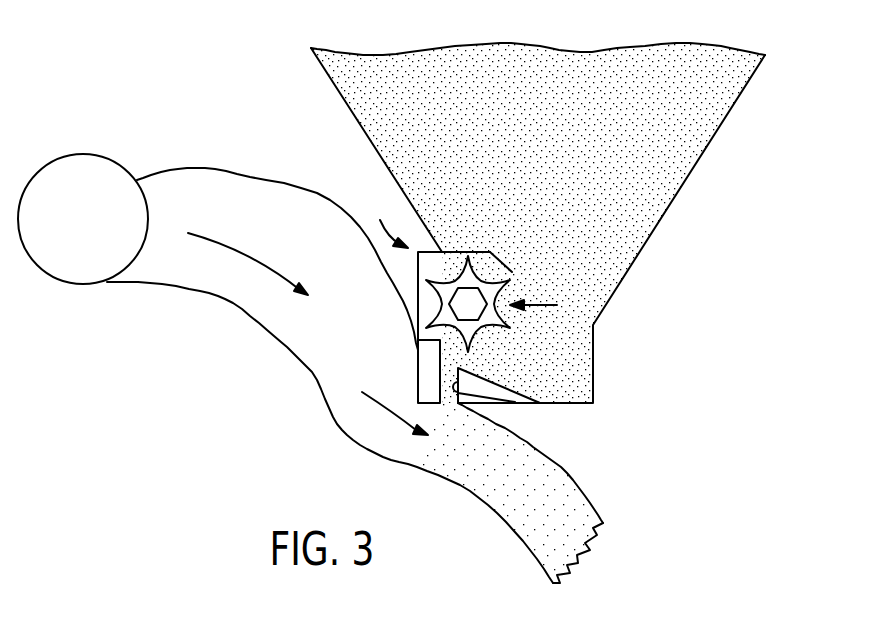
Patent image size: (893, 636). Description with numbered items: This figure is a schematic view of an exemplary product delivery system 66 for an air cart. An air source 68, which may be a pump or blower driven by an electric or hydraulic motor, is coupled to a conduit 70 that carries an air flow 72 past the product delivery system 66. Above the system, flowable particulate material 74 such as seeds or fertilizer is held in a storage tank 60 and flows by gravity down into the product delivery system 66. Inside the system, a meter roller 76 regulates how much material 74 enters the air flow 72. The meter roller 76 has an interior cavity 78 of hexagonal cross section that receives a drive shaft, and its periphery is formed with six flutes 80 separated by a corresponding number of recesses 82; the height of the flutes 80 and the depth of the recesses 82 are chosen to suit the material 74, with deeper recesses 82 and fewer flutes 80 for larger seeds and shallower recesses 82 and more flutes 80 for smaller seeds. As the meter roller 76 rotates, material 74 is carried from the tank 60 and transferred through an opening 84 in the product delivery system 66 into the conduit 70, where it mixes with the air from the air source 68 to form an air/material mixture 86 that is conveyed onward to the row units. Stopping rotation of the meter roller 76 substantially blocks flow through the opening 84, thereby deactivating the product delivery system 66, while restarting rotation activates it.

The storage tank 60 is at (332, 83).
The product delivery system 66 is at (386, 220).
The air source 68 is at (82, 153).
The conduit 70 is at (292, 350).
The air flow 72 is at (248, 250).
The flowable particulate material 74 is at (695, 148).
The meter roller 76 is at (540, 305).
The interior cavity 78 is at (455, 314).
The flutes 80 is at (430, 279).
The recesses 82 is at (490, 252).
The opening 84 is at (460, 404).
The air/material mixture 86 is at (510, 498).